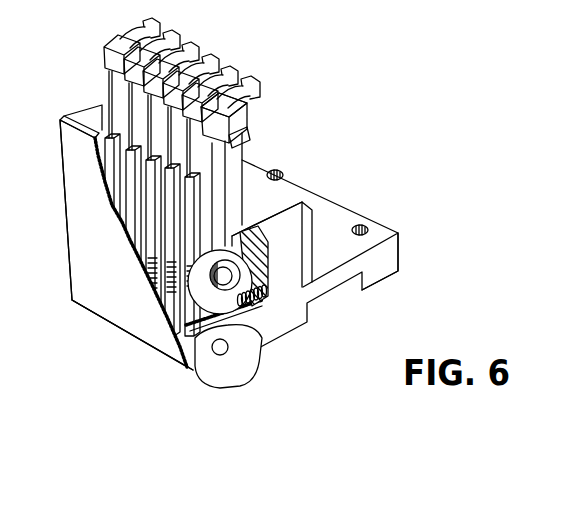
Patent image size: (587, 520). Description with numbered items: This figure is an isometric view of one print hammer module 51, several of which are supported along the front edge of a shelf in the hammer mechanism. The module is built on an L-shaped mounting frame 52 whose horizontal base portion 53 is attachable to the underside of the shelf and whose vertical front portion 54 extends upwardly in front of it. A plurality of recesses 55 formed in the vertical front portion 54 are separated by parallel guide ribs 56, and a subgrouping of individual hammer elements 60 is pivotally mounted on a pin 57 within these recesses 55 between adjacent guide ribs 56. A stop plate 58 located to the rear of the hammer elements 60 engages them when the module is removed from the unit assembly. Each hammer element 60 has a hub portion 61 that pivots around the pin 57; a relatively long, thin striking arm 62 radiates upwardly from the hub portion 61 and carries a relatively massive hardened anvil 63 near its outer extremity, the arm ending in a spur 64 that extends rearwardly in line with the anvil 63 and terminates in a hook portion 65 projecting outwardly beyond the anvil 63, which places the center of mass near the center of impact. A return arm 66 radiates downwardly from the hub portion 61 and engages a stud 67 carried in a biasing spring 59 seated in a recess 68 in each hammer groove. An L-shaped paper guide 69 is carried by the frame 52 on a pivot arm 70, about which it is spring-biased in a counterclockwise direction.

The hammer module 51 is at (312, 170).
The L-shaped mounting frame 52 is at (406, 246).
The horizontal base portion 53 is at (356, 213).
The vertical front portion 54 is at (250, 338).
The recesses 55 is at (140, 204).
The guide ribs 56 is at (153, 253).
The pin 57 is at (240, 260).
The stop plate 58 is at (280, 200).
The biasing spring 59 is at (229, 277).
The hammer element 60 is at (232, 171).
The hub portion 61 is at (234, 235).
The striking arm 62 is at (236, 187).
The anvil 63 is at (118, 77).
The spur 64 is at (250, 138).
The hook portion 65 is at (262, 100).
The return arm 66 is at (176, 345).
The stud 67 is at (250, 313).
The recess 68 is at (266, 306).
The L-shaped paper guide 69 is at (80, 257).
The pivot arm 70 is at (218, 356).